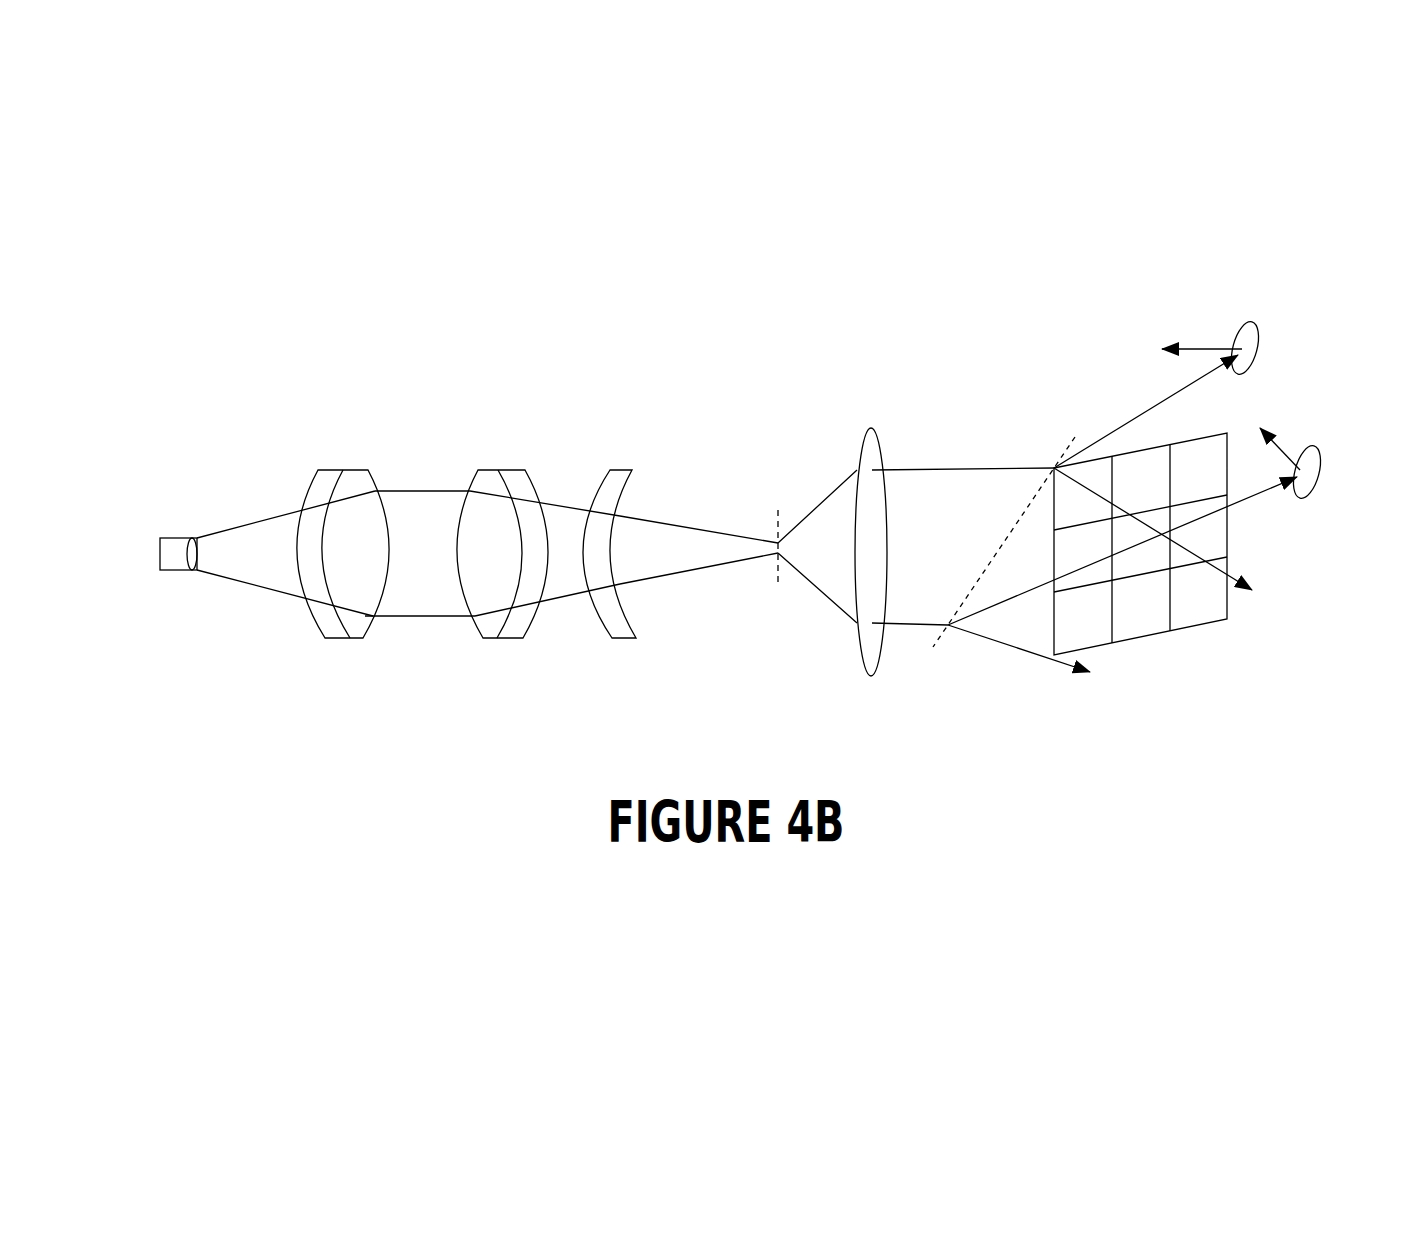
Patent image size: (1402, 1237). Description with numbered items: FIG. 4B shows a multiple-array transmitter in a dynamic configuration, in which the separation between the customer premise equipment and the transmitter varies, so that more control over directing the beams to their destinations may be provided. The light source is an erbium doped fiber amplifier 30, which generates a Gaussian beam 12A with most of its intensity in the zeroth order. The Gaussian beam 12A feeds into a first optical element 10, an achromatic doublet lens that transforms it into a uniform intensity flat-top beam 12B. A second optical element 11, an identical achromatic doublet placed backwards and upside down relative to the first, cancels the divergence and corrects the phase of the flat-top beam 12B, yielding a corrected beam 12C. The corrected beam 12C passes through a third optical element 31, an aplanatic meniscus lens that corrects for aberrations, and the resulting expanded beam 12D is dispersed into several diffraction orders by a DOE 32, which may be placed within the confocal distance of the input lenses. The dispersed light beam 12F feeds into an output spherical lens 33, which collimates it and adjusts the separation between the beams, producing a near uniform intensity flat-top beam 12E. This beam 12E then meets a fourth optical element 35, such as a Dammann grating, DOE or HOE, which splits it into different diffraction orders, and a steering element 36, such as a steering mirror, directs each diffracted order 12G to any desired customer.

The erbium doped fiber amplifier (EDFA) 30 is at (180, 572).
The first optical element 10 is at (370, 637).
The second optical element 11 is at (473, 638).
The third optical element 31 is at (640, 625).
The DOE 32 is at (777, 590).
The spherical lens 33 is at (873, 663).
The fourth optical element 35 is at (928, 652).
The steering element 36 is at (1240, 338).
The Gaussian beam 12A is at (263, 537).
The uniform intensity flat-top beam 12B is at (415, 507).
The corrected beam 12C is at (560, 527).
The expanded beam 12D is at (690, 543).
The collimated uniform intensity flat-top beam 12E is at (952, 483).
The dispersed light beam 12F is at (825, 510).
The diffracted order 12G is at (1132, 418).